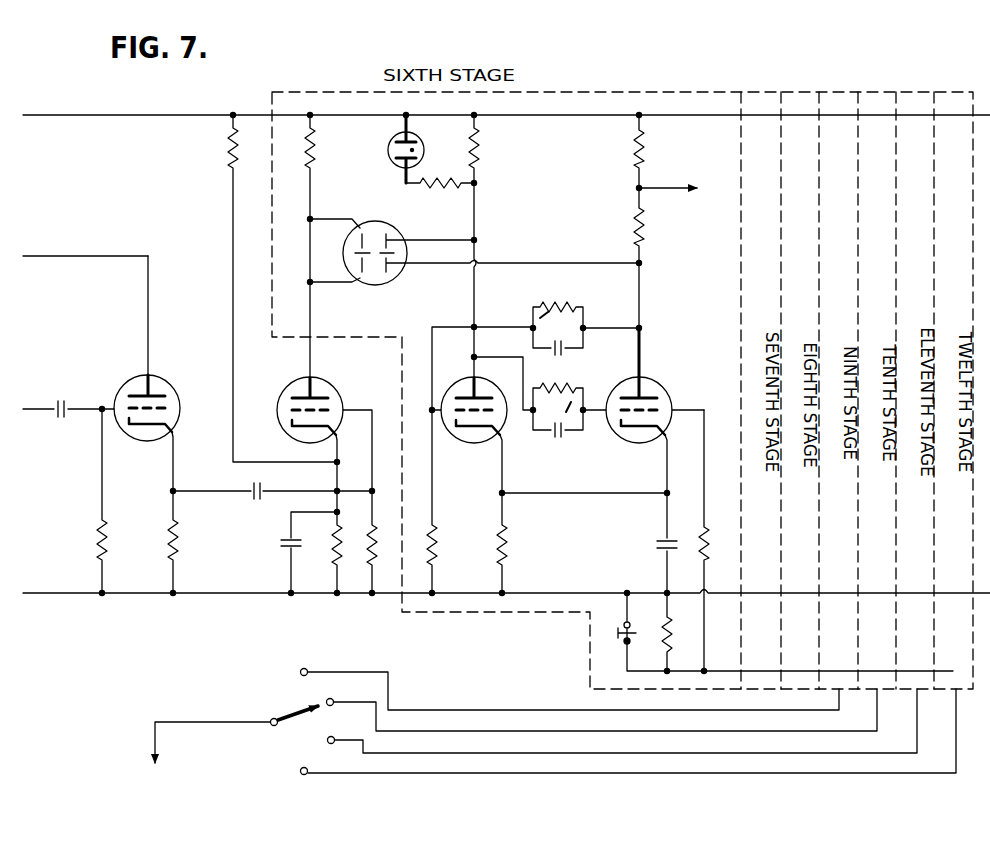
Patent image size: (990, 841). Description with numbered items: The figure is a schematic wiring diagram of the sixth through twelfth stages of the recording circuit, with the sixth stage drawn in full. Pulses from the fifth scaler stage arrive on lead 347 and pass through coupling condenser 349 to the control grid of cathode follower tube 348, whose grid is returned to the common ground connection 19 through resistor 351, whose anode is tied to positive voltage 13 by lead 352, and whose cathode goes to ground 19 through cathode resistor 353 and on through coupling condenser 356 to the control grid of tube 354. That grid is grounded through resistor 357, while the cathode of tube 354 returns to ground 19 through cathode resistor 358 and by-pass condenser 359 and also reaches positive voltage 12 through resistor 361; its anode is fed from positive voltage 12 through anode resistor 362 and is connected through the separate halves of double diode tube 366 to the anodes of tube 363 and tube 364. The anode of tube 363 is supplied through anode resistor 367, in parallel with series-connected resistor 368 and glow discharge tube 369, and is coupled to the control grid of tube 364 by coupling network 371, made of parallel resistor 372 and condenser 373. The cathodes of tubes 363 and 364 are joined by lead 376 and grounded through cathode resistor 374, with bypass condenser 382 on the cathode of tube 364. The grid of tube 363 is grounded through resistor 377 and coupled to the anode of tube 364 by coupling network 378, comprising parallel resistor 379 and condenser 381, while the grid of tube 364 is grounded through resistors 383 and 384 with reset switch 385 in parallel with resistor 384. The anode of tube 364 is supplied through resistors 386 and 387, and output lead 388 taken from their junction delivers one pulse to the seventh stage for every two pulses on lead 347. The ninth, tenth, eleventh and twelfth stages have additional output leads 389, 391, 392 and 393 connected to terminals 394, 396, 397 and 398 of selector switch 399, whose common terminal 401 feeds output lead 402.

The positive voltage 12 is at (36, 117).
The positive voltage 13 is at (36, 258).
The common ground connection 19 is at (36, 595).
The lead 347 is at (30, 403).
The cathode follower tube 348 is at (165, 393).
The coupling condenser 349 is at (60, 403).
The resistor 351 is at (97, 541).
The lead 352 is at (148, 317).
The cathode resistor 353 is at (178, 541).
The tube 354 is at (330, 392).
The coupling condenser 356 is at (257, 500).
The resistor 357 is at (338, 512).
The cathode resistor 358 is at (369, 545).
The by-pass condenser 359 is at (283, 546).
The resistor 361 is at (228, 153).
The anode resistor 362 is at (316, 153).
The tube 363 is at (486, 392).
The tube 364 is at (651, 392).
The double diode tube 366 is at (382, 283).
The anode resistor 367 is at (480, 153).
The resistor 368 is at (434, 189).
The glow discharge tube 369 is at (422, 142).
The coupling network 371 is at (571, 414).
The resistor 372 is at (555, 385).
The condenser 373 is at (553, 440).
The cathode resistor 374 is at (508, 542).
The lead 376 is at (563, 494).
The resistor 377 is at (438, 542).
The coupling network 378 is at (543, 318).
The resistor 379 is at (559, 307).
The condenser 381 is at (563, 355).
The bypass condenser 382 is at (657, 546).
The resistor 383 is at (703, 527).
The resistor 384 is at (670, 640).
The reset switch 385 is at (623, 625).
The resistor 386 is at (645, 151).
The resistor 387 is at (645, 222).
The output lead 388 is at (668, 177).
The output lead 389 is at (840, 701).
The output lead 391 is at (878, 701).
The output lead 392 is at (918, 701).
The output lead 393 is at (957, 701).
The terminal 394 is at (305, 664).
The terminal 396 is at (329, 699).
The terminal 397 is at (331, 736).
The terminal 398 is at (306, 768).
The selector switch 399 is at (302, 688).
The common terminal 401 is at (274, 726).
The output lead 402 is at (152, 756).